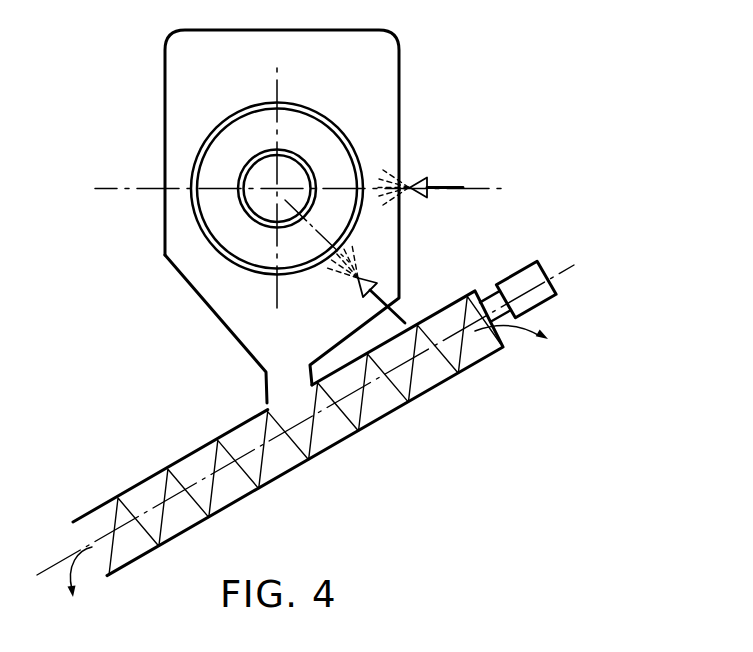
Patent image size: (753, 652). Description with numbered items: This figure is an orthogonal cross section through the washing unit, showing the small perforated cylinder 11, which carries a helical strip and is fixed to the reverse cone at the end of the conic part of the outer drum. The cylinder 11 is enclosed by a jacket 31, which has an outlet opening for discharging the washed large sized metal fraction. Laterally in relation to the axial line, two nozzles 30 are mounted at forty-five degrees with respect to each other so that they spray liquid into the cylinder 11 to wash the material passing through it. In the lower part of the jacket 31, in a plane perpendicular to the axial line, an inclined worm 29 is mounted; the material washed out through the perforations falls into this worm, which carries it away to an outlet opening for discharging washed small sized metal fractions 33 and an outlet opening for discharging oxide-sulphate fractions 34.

The small perforated cylinder 11 is at (263, 102).
The inclined worm 29 is at (133, 485).
The nozzles 30 is at (422, 180).
The jacket 31 is at (399, 54).
The outlet opening for discharging washed small sized metal fractions 33 is at (525, 340).
The outlet opening for discharging oxide-sulphate fractions 34 is at (70, 598).